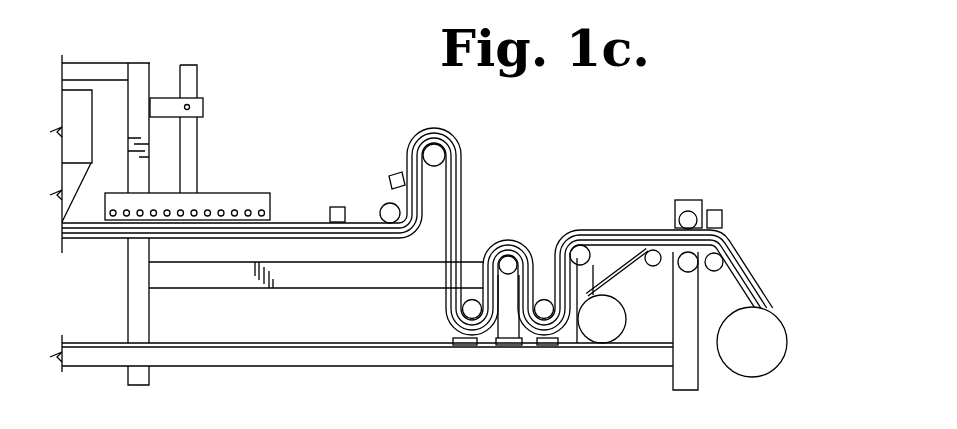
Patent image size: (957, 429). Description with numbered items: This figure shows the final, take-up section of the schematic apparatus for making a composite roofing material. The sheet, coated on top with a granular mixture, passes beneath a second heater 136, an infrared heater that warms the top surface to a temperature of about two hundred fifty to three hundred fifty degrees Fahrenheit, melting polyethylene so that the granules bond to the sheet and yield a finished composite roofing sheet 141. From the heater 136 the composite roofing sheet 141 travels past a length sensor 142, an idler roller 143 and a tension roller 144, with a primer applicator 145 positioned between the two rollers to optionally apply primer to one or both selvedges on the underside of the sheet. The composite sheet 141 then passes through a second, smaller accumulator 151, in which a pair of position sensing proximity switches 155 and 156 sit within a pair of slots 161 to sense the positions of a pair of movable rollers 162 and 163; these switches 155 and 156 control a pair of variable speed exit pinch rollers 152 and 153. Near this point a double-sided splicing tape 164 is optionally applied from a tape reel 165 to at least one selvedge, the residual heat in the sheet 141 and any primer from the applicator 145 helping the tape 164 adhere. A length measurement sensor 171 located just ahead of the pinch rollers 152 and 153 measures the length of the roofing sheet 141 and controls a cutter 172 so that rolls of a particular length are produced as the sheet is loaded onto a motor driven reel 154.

The second heater 136 is at (251, 198).
The composite roofing sheet 141 is at (463, 174).
The length sensor 142 is at (337, 207).
The idler roller 143 is at (383, 206).
The tension roller 144 is at (453, 139).
The primer applicator 145 is at (395, 172).
The second accumulator 151 is at (539, 204).
The exit pinch roller 152 is at (687, 211).
The exit pinch roller 153 is at (686, 272).
The motor driven reel 154 is at (788, 340).
The position sensing proximity switch 155 is at (467, 345).
The position sensing proximity switch 156 is at (510, 345).
The slots 161 is at (492, 342).
The movable roller 162 is at (464, 309).
The movable roller 163 is at (546, 298).
The double-sided splicing tape 164 is at (636, 266).
The tape reel 165 is at (622, 343).
The length measurement sensor 171 is at (593, 228).
The cutter 172 is at (714, 210).